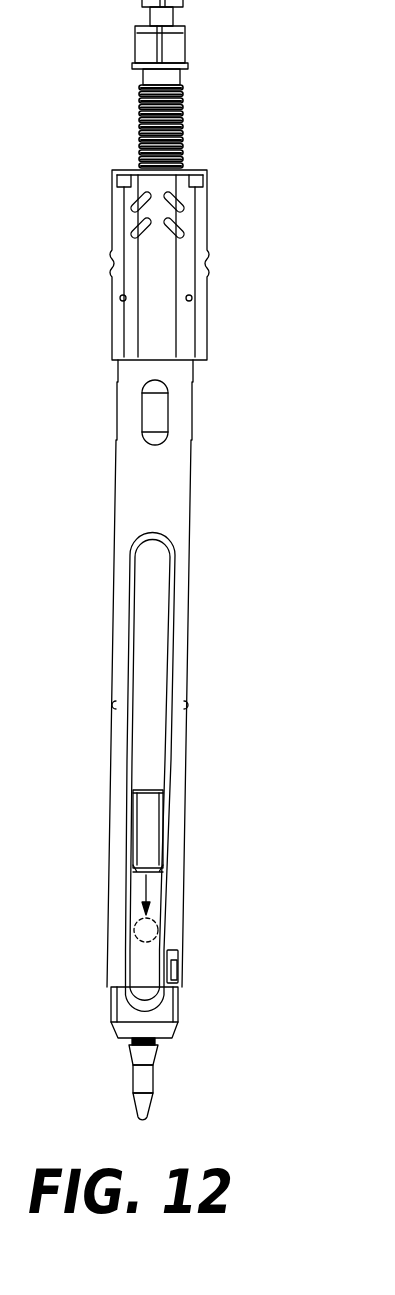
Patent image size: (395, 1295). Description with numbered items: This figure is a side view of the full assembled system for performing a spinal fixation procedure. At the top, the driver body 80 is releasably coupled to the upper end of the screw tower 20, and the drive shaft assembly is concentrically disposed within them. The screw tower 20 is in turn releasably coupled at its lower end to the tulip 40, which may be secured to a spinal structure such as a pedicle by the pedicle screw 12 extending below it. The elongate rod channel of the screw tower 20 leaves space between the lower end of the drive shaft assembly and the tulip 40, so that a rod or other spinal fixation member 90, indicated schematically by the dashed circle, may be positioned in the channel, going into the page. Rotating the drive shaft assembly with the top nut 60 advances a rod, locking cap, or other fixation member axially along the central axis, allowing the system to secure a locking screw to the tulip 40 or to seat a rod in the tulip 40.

The pedicle screw 12 is at (153, 1078).
The screw tower 20 is at (190, 503).
The tulip 40 is at (167, 1012).
The top nut 60 is at (186, 52).
The driver body 80 is at (207, 232).
The spinal fixation member 90 is at (152, 928).